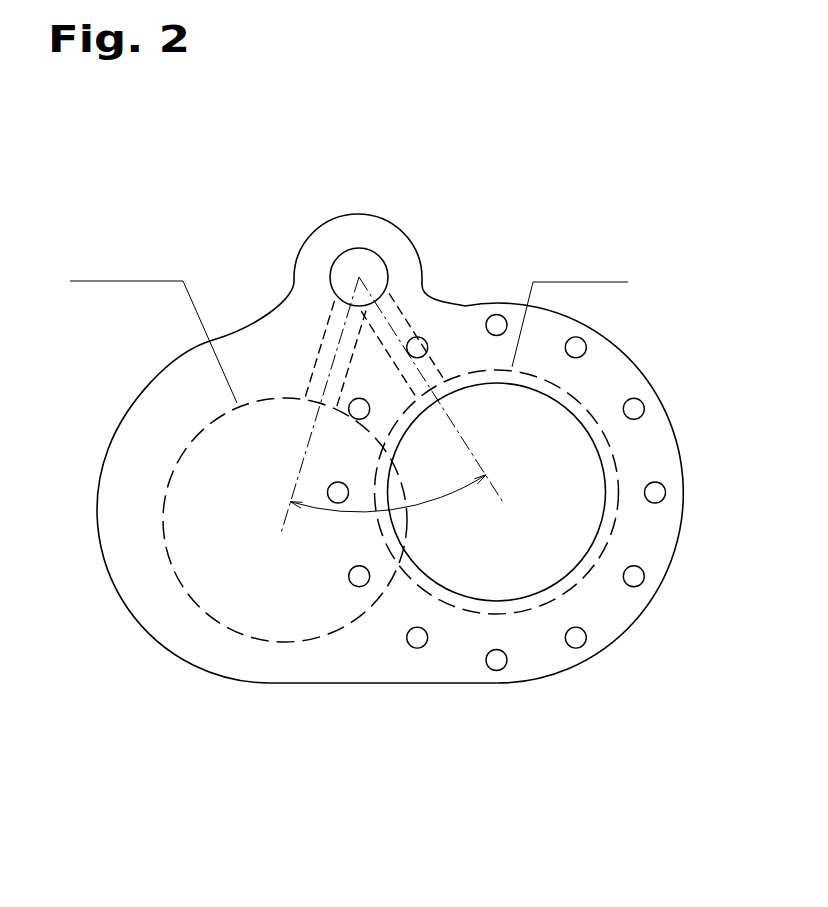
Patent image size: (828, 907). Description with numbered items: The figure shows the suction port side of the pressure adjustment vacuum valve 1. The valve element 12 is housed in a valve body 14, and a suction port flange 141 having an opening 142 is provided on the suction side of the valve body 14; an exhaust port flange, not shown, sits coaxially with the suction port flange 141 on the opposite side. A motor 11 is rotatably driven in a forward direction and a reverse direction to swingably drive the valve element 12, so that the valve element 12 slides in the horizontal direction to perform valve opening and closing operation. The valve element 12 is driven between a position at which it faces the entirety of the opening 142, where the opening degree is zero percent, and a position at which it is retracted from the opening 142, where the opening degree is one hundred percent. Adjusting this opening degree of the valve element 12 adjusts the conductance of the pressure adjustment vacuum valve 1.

The pressure adjustment vacuum valve 1 is at (383, 779).
The motor 11 is at (385, 262).
The valve element 12 is at (410, 573).
The valve body 14 is at (142, 628).
The suction port flange 141 is at (553, 660).
The opening 142 is at (566, 540).